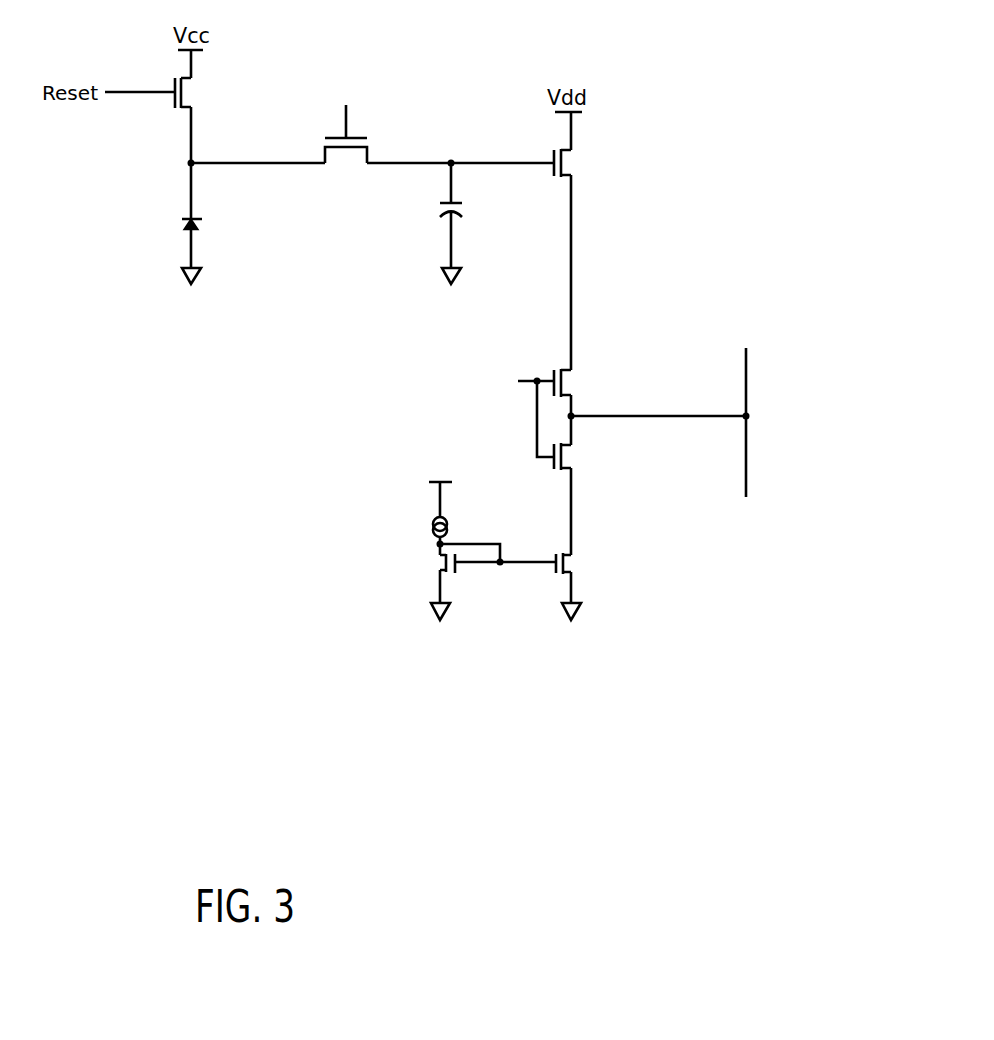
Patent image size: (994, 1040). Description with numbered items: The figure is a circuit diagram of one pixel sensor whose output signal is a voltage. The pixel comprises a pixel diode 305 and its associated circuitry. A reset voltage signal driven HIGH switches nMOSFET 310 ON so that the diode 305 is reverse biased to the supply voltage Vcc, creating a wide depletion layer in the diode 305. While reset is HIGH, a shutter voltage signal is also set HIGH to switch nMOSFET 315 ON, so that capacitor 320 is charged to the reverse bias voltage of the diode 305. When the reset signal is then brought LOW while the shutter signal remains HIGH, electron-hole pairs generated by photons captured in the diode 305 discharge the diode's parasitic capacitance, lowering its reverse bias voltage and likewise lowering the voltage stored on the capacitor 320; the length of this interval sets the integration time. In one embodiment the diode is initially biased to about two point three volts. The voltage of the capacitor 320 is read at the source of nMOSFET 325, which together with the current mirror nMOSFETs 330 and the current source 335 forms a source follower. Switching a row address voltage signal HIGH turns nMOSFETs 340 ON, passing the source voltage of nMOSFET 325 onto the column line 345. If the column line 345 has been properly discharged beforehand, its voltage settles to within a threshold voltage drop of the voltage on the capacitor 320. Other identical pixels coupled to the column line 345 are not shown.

The pixel diode 305 is at (183, 227).
The nMOSFET 310 is at (162, 107).
The nMOSFET 315 is at (345, 157).
The capacitor 320 is at (442, 223).
The nMOSFET 325 is at (572, 158).
The current mirror nMOSFETs 330 is at (457, 573).
The current source 335 is at (430, 528).
The nMOSFETs 340 is at (573, 383).
The column line 345 is at (528, 405).